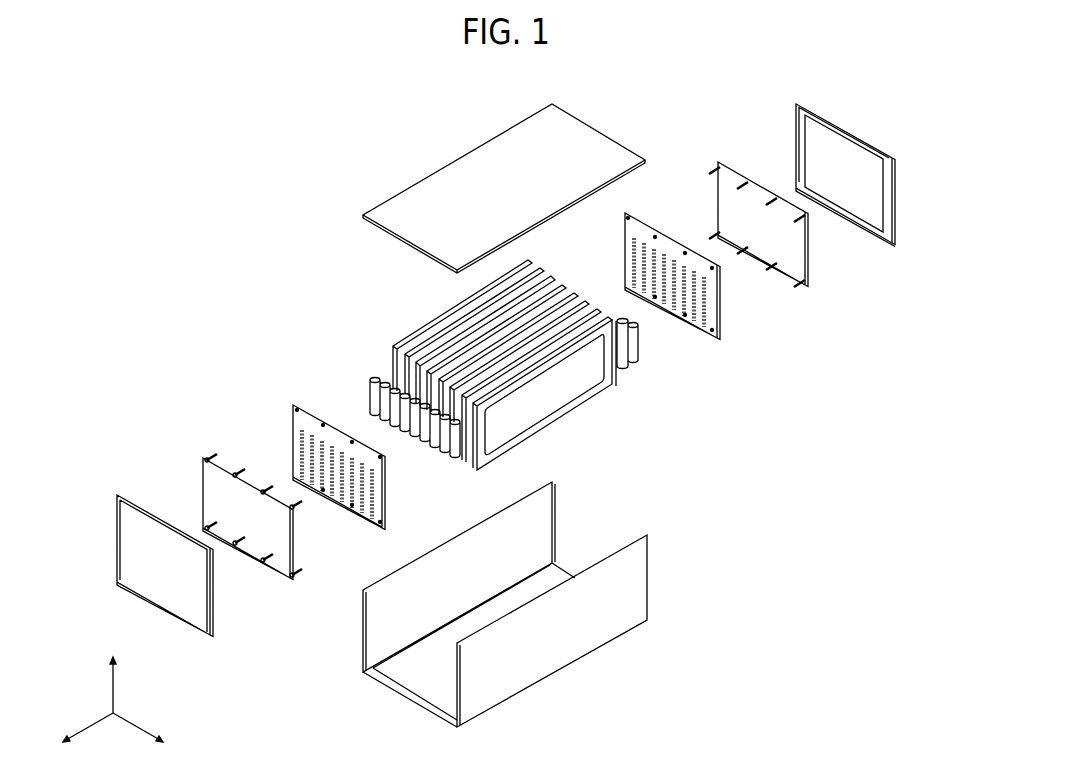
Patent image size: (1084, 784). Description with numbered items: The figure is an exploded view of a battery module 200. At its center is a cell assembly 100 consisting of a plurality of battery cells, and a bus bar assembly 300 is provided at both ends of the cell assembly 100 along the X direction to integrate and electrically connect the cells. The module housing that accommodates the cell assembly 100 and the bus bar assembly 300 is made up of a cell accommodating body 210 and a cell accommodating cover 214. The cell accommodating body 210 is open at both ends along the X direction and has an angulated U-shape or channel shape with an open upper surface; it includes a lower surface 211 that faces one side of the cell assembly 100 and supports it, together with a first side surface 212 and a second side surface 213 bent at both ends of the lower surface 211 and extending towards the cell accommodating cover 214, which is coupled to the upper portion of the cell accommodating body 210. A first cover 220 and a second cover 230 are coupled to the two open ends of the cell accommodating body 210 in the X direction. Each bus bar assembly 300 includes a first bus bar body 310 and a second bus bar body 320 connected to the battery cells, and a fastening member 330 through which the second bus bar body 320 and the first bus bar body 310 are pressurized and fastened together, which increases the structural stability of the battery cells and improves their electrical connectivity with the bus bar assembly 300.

The battery module 200 is at (270, 94).
The cell assembly 100 is at (430, 310).
The cell accommodating body 210 is at (687, 547).
The lower surface 211 is at (427, 682).
The first side surface 212 is at (649, 576).
The second side surface 213 is at (363, 622).
The cell accommodating cover 214 is at (467, 167).
The first cover 220 is at (117, 544).
The second cover 230 is at (893, 193).
The bus bar assembly 300 is at (201, 397).
The first bus bar body 310 is at (305, 422).
The second bus bar body 320 is at (250, 495).
The fastening member 330 is at (212, 455).